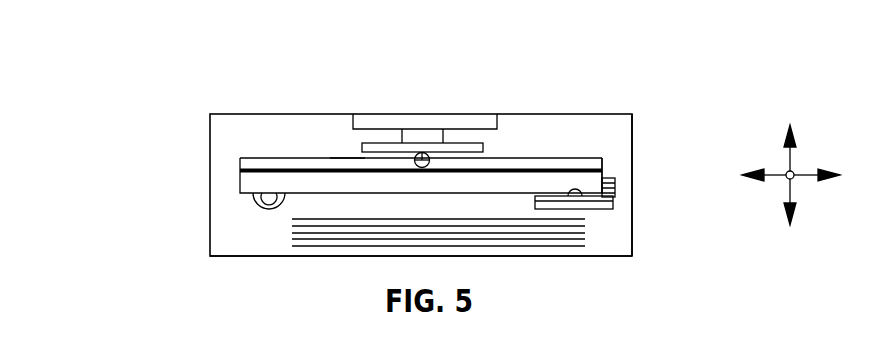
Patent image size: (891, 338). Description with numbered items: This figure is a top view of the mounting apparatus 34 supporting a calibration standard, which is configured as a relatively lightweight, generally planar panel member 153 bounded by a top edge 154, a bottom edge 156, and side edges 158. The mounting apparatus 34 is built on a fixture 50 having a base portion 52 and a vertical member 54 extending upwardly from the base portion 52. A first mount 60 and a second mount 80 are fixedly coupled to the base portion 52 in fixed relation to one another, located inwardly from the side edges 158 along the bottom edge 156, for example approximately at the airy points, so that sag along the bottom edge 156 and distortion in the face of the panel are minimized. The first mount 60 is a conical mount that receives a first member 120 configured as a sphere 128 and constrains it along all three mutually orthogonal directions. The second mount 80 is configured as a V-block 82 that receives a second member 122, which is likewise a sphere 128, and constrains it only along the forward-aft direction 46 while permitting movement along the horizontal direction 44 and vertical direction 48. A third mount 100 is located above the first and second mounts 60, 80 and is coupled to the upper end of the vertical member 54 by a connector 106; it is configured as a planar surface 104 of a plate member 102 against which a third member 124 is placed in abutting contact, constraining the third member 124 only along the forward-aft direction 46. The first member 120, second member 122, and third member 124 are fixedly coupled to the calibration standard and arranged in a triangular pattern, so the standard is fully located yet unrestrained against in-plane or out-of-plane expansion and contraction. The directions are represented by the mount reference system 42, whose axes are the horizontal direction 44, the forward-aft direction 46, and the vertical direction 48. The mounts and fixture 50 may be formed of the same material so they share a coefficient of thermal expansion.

The mounting apparatus 34 is at (593, 113).
The base portion 52 is at (633, 225).
The fixture 50 is at (633, 256).
The vertical member 54 is at (370, 122).
The connector 106 is at (413, 135).
The third mount 100 is at (472, 108).
The plate member 102 is at (487, 148).
The third member 124 is at (449, 112).
The sphere 128 is at (421, 152).
The side edge 158 is at (240, 162).
The panel member 153 is at (263, 158).
The planar surface 104 is at (347, 158).
The top edge 154 is at (592, 168).
The second member 122 is at (580, 196).
The second mount 80 is at (589, 244).
The V-block 82 is at (592, 203).
The first mount 60 is at (263, 201).
The first member 120 is at (253, 202).
The bottom edge 156 is at (347, 193).
The mount reference system 42 is at (794, 172).
The horizontal direction 44 is at (806, 178).
The forward-aft direction 46 is at (792, 196).
The vertical direction 48 is at (786, 178).